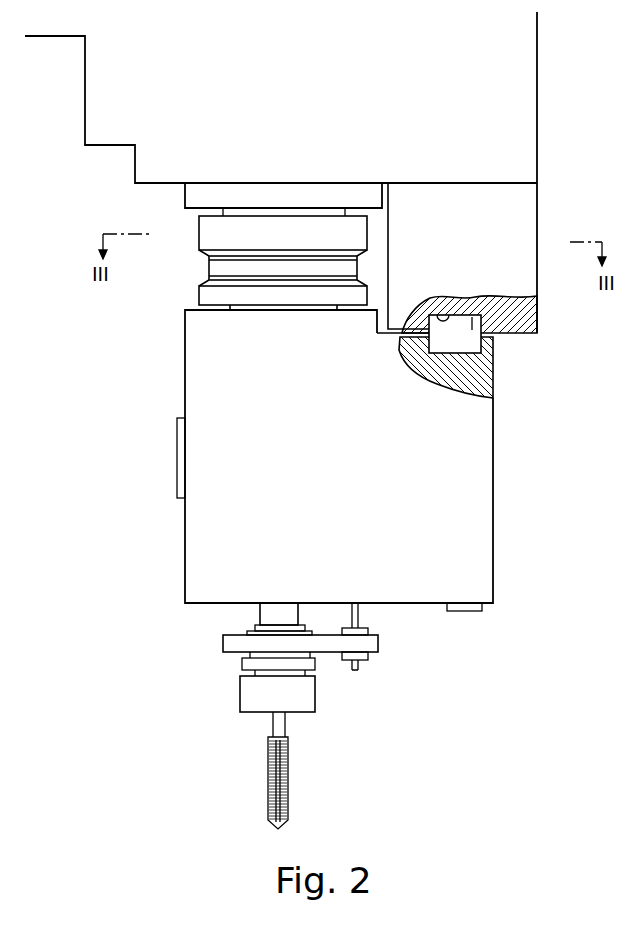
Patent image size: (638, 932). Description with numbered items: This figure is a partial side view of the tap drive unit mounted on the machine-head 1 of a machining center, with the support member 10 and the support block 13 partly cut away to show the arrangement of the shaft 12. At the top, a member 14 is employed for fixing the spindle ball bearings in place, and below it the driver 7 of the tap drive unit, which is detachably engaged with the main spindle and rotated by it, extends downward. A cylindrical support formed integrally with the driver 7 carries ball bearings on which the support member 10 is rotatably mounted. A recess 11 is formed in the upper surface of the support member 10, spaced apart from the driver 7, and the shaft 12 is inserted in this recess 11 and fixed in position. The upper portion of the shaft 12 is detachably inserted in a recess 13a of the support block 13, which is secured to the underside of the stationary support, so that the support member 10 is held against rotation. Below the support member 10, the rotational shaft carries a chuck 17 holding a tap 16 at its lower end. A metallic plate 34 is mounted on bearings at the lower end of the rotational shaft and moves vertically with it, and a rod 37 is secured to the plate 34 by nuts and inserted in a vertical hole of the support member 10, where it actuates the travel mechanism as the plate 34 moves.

The machine-head 1 is at (538, 107).
The member 14 is at (185, 201).
The driver 7 is at (199, 293).
The support member 10 is at (185, 379).
The support block 13 is at (538, 287).
The recess 13a is at (443, 315).
The shaft 12 is at (475, 313).
The recess 11 is at (481, 345).
The rod 37 is at (360, 613).
The metallic plate 34 is at (223, 652).
The chuck 17 is at (316, 703).
The tap 16 is at (290, 787).